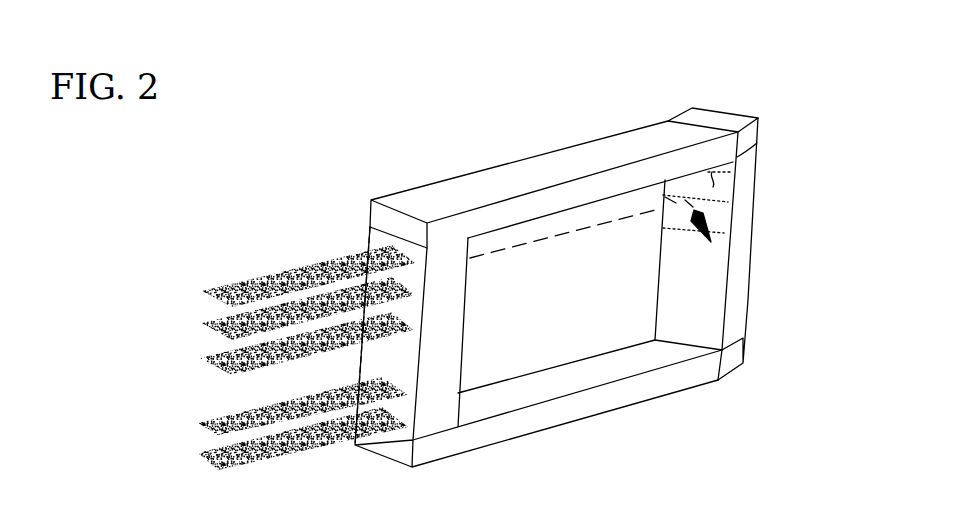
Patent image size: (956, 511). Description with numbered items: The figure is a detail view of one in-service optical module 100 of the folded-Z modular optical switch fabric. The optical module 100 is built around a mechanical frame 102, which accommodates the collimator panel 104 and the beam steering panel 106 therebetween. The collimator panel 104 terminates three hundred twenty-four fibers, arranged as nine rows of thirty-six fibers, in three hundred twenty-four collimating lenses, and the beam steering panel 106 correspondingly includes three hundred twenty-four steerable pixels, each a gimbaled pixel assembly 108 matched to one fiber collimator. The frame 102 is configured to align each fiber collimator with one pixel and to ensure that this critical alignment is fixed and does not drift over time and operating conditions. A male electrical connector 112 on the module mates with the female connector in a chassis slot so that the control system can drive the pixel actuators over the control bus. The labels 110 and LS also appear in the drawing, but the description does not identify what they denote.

The optical module 100 is at (286, 195).
The frame 102 is at (417, 197).
The collimator panel 104 is at (445, 345).
The beam steering panel 106 is at (740, 230).
The gimbaled pixel assembly 108 is at (727, 186).
The optical sheets 110 is at (214, 451).
The male electrical connector 112 is at (748, 290).
The light source LS is at (585, 231).